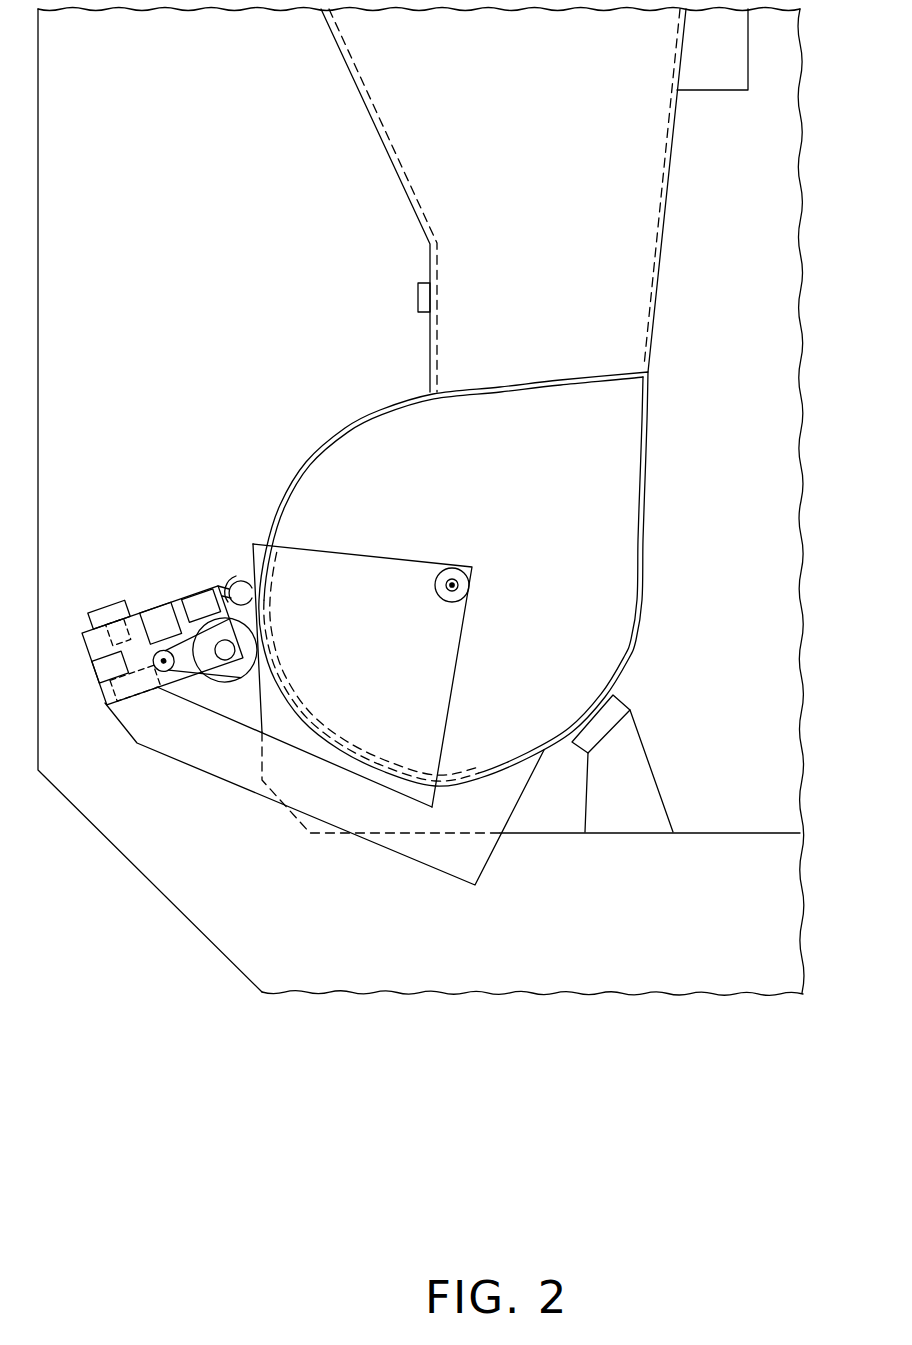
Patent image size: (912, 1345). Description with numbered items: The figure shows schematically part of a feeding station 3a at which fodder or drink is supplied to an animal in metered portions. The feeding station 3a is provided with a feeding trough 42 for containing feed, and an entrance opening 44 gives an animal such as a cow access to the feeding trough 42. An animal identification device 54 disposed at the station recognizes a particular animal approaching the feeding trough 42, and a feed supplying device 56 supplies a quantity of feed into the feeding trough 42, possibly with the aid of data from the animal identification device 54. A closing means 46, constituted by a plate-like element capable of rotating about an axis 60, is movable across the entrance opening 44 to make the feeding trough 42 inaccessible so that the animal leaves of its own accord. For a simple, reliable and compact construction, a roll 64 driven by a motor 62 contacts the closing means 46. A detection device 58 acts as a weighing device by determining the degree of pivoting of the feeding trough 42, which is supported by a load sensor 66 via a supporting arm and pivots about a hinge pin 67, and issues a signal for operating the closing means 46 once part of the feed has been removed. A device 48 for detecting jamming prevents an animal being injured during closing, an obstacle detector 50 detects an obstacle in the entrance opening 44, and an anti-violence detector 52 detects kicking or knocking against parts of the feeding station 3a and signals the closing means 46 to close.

The feeding trough 42 is at (623, 660).
The entrance opening 44 is at (345, 428).
The closing means 46 is at (307, 560).
The device for detecting jamming 48 is at (196, 601).
The obstacle detector 50 is at (418, 292).
The anti-violence detector 52 is at (153, 620).
The animal identification device 54 is at (108, 663).
The feed supplying device 56 is at (663, 218).
The detection device 58 is at (358, 803).
The axis 60 is at (452, 585).
The motor 62 is at (173, 682).
The roll 64 is at (235, 680).
The load sensor 66 is at (123, 688).
The hinge pin 67 is at (241, 592).
The feeding station 3a is at (652, 533).